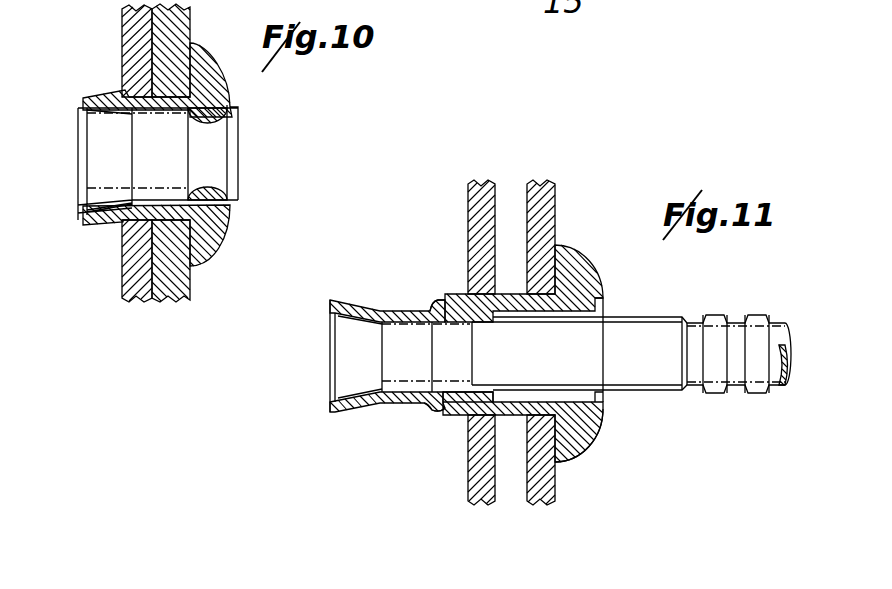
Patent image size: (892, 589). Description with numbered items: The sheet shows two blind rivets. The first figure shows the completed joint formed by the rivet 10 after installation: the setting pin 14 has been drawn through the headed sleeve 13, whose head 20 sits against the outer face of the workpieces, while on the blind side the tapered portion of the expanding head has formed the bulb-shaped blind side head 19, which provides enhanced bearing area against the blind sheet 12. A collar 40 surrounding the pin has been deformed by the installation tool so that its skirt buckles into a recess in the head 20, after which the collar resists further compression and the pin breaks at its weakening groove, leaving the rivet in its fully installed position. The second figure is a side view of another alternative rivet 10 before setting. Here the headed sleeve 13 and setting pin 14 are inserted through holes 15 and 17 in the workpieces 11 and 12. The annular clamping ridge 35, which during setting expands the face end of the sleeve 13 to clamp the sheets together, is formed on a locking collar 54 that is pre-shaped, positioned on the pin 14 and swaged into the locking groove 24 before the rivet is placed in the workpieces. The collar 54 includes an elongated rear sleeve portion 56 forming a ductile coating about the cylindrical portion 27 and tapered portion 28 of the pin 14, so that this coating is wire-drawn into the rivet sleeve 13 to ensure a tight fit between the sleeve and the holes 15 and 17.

In FIG. 10, the bulb-shaped blind side head 19 is at (124, 90).
In FIG. 10, the collar 40 is at (214, 125).
In FIG. 10, the head of the sleeve 20 is at (204, 240).
In FIG. 11, the blind rivet 10 is at (618, 306).
In FIG. 11, the workpiece sheet 11 is at (540, 190).
In FIG. 11, the blind sheet 12 is at (490, 182).
In FIG. 11, the headed sleeve 13 is at (512, 292).
In FIG. 11, the setting pin 14 is at (652, 393).
In FIG. 11, the hole in workpiece 15 is at (578, 456).
In FIG. 11, the hole in blind sheet 17 is at (460, 414).
In FIG. 11, the locking groove 24 is at (458, 325).
In FIG. 11, the cylindrical portion of the head 27 is at (413, 392).
In FIG. 11, the tapered portion of the head 28 is at (353, 390).
In FIG. 11, the clamping ridge 35 is at (438, 299).
In FIG. 11, the locking collar 54 is at (432, 335).
In FIG. 11, the elongated rear sleeve portion 56 is at (375, 311).